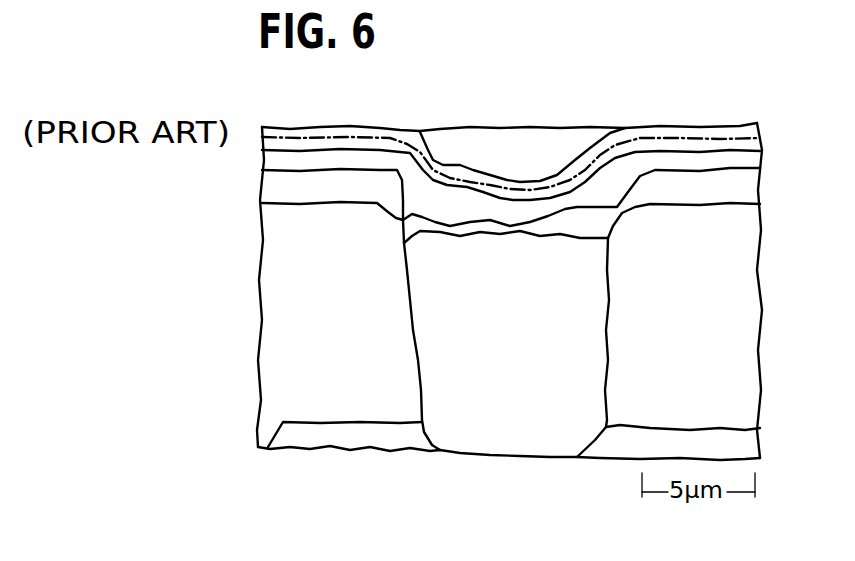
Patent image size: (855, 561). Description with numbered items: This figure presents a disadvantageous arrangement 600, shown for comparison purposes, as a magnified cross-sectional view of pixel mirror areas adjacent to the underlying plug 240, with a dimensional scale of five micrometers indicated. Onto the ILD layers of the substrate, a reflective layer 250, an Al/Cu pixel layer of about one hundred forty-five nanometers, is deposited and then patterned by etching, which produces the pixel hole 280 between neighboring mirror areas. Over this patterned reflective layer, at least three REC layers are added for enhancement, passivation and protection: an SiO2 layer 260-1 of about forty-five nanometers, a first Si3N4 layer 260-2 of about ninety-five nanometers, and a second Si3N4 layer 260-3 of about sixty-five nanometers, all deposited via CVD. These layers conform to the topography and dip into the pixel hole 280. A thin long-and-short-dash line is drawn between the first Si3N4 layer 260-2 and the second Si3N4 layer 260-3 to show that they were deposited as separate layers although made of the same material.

The disadvantageous arrangement 600 is at (508, 58).
The pixel hole 280 is at (563, 160).
The SiO2 layer 260-1 is at (306, 165).
The first Si3N4 layer 260-2 is at (473, 180).
The second Si3N4 layer 260-3 is at (533, 177).
The underlying plug 240 is at (610, 277).
The reflective layer 250 is at (683, 190).